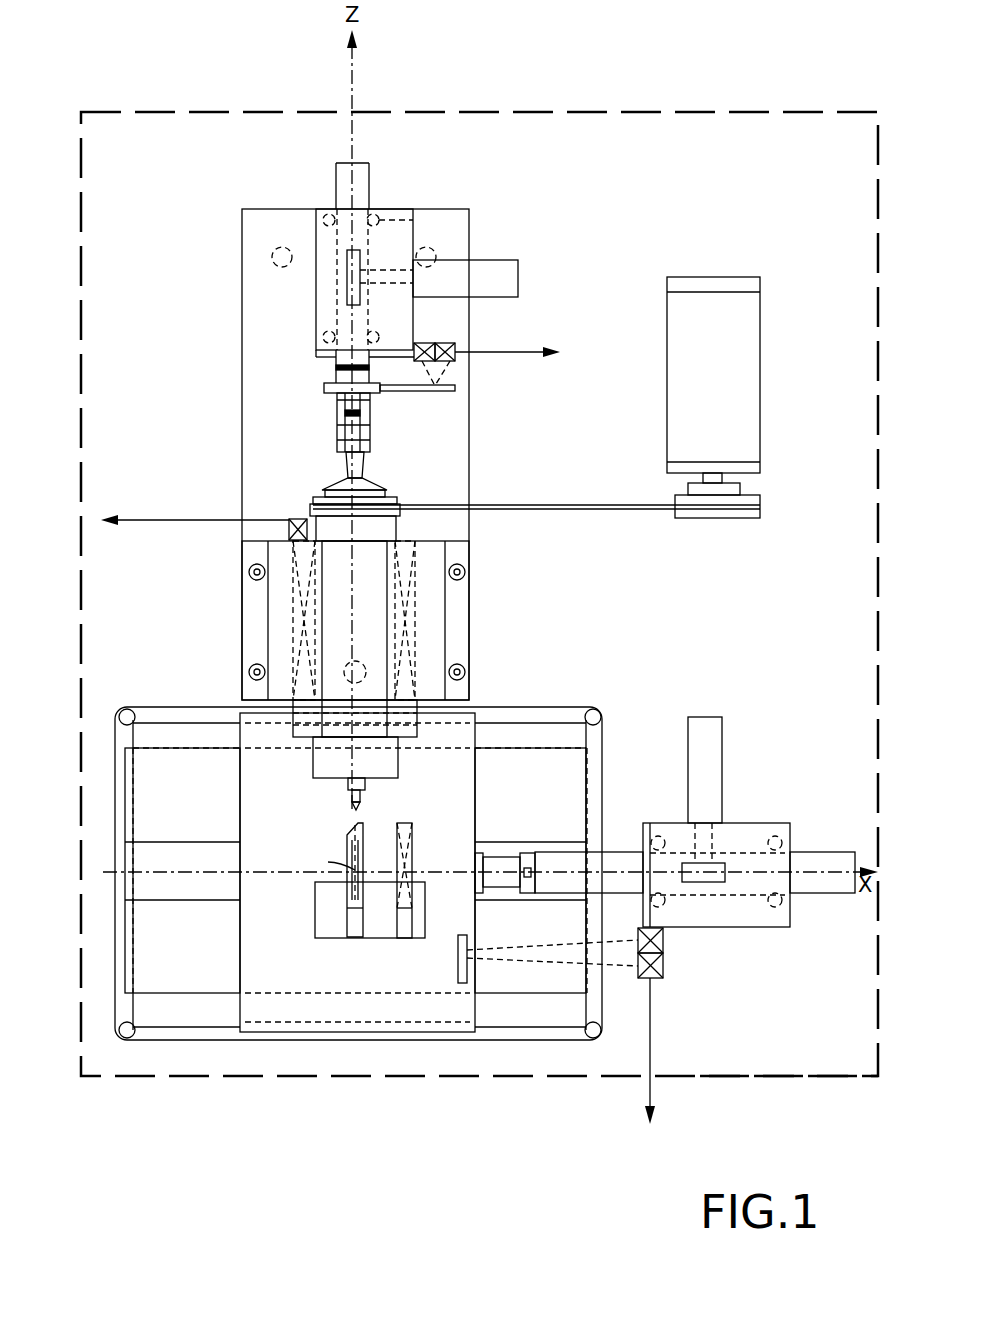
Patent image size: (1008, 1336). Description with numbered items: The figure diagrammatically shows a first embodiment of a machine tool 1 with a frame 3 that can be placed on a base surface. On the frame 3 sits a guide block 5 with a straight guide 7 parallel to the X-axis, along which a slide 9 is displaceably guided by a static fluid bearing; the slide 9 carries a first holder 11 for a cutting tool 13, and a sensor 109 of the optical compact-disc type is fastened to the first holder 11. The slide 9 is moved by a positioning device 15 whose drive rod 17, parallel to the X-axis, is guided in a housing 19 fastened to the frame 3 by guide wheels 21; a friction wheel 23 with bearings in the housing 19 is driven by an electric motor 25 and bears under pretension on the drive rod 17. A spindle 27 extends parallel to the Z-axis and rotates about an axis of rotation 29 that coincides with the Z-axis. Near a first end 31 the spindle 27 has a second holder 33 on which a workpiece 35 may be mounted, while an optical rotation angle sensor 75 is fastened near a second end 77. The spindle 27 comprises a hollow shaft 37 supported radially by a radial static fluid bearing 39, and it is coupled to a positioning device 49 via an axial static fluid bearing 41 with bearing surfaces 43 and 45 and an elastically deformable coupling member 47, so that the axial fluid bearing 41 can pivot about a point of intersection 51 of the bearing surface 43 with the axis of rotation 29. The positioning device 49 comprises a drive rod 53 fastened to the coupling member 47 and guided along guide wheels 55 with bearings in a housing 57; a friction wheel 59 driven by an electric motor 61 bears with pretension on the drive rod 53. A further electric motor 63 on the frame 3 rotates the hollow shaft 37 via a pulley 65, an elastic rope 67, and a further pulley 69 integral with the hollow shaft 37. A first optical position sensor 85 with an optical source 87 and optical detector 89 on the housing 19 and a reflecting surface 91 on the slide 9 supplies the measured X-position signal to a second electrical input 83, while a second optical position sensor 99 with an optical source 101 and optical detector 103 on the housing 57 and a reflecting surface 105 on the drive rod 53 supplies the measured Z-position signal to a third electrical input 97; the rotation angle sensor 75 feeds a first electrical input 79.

The machine tool 1 is at (152, 1092).
The frame 3 is at (766, 1077).
The guide block 5 is at (590, 757).
The straight guide 7 is at (520, 893).
The slide 9 is at (242, 805).
The first holder 11 is at (330, 925).
The cutting tool 13 is at (346, 846).
The positioning device 15 is at (790, 997).
The drive rod 17 is at (831, 885).
The housing 19 is at (738, 927).
The guide wheels 21 is at (656, 836).
The friction wheel 23 is at (712, 865).
The electric motor 25 is at (722, 731).
The spindle 27 is at (386, 762).
The axis of rotation 29 is at (357, 607).
The first end 31 is at (313, 782).
The second holder 33 is at (348, 786).
The workpiece 35 is at (362, 805).
The hollow shaft 37 is at (318, 602).
The radial static fluid bearing 39 is at (412, 553).
The axial static fluid bearing 41 is at (337, 487).
The bearing surface 43 is at (370, 484).
The bearing surface 45 is at (395, 501).
The elastically deformable coupling member 47 is at (372, 418).
The positioning device 49 is at (487, 209).
The point of intersection 51 is at (397, 519).
The drive rod 53 is at (370, 179).
The guide wheels 55 is at (327, 214).
The housing 57 is at (316, 318).
The friction wheel 59 is at (347, 276).
The electric motor 61 is at (500, 272).
The electric motor 63 is at (744, 350).
The pulley 65 is at (735, 519).
The rope 67 is at (580, 510).
The further pulley 69 is at (289, 522).
The optical rotation angle sensor 75 is at (289, 532).
The second end 77 is at (388, 536).
The first electrical input 79 is at (193, 505).
The second electrical input 83 is at (667, 1063).
The first optical position sensor 85 is at (634, 993).
The optical source 87 is at (663, 940).
The optical detector 89 is at (663, 967).
The reflecting surface 91 is at (467, 965).
The third electrical input 97 is at (524, 346).
The second optical position sensor 99 is at (490, 381).
The optical source 101 is at (420, 362).
The optical detector 103 is at (444, 343).
The reflecting surface 105 is at (437, 392).
The sensor 109 is at (412, 853).